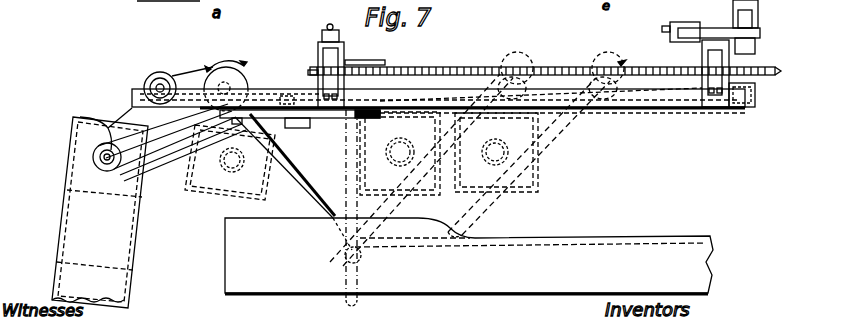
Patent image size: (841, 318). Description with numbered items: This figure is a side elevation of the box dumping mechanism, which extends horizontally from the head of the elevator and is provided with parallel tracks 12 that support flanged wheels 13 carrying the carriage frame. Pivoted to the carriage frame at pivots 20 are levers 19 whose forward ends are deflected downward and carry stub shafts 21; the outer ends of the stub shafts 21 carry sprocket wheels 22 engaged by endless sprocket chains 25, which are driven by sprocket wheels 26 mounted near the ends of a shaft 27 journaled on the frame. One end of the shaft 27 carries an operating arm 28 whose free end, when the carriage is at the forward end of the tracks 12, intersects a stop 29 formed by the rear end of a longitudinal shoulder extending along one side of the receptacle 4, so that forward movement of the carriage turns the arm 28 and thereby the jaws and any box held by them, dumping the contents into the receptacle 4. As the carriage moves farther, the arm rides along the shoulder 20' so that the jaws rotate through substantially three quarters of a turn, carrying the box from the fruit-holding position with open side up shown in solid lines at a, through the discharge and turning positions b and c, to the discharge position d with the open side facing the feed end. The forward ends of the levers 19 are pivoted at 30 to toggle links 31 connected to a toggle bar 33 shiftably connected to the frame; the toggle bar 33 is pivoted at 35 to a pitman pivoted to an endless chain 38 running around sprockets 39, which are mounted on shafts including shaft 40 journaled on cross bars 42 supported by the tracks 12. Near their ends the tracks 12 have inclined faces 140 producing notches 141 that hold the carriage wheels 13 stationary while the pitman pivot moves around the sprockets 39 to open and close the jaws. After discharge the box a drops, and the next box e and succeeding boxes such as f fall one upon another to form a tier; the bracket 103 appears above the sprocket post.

The receptacle 4 is at (618, 240).
The parallel tracks 12 is at (144, 80).
The flanged wheels 13 is at (164, 74).
The levers 19 is at (163, 152).
The pivots 20 is at (224, 132).
The rod 20' is at (477, 159).
The stub shafts 21 is at (92, 160).
The sprocket wheels 22 is at (105, 125).
The endless sprocket chains 25 is at (84, 114).
The sprocket wheels 26 is at (248, 76).
The shaft 27 is at (252, 81).
The operating arm 28 is at (300, 172).
The stop 29 is at (345, 252).
The pivots 30 is at (290, 135).
The toggle links 31 is at (310, 120).
The toggle bar 33 is at (372, 118).
The pivot 35 is at (294, 128).
The endless chain 38 is at (640, 68).
The sprockets 39 is at (313, 72).
The shaft 40 is at (328, 30).
The cross bars 42 is at (360, 63).
The cap 103 is at (348, 45).
The inclined faces 140 is at (694, 108).
The notches 141 is at (752, 108).
The box a is at (78, 125).
The box position b is at (218, 196).
The box position c is at (428, 198).
The discharge position d is at (530, 198).
The box e is at (76, 217).
The box f is at (72, 278).